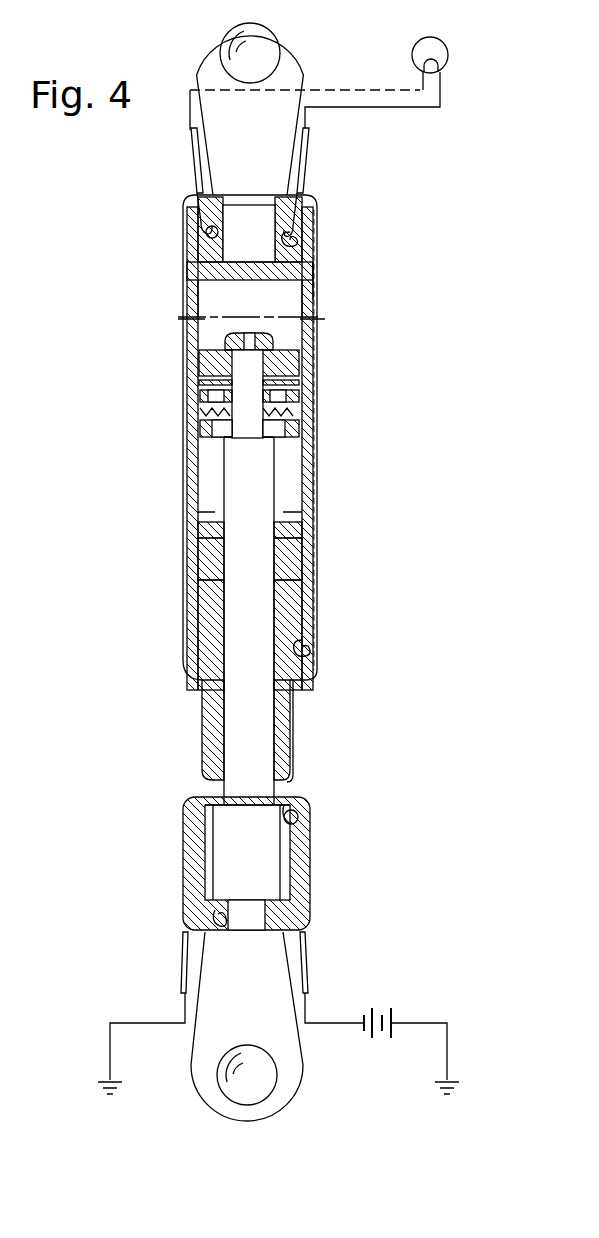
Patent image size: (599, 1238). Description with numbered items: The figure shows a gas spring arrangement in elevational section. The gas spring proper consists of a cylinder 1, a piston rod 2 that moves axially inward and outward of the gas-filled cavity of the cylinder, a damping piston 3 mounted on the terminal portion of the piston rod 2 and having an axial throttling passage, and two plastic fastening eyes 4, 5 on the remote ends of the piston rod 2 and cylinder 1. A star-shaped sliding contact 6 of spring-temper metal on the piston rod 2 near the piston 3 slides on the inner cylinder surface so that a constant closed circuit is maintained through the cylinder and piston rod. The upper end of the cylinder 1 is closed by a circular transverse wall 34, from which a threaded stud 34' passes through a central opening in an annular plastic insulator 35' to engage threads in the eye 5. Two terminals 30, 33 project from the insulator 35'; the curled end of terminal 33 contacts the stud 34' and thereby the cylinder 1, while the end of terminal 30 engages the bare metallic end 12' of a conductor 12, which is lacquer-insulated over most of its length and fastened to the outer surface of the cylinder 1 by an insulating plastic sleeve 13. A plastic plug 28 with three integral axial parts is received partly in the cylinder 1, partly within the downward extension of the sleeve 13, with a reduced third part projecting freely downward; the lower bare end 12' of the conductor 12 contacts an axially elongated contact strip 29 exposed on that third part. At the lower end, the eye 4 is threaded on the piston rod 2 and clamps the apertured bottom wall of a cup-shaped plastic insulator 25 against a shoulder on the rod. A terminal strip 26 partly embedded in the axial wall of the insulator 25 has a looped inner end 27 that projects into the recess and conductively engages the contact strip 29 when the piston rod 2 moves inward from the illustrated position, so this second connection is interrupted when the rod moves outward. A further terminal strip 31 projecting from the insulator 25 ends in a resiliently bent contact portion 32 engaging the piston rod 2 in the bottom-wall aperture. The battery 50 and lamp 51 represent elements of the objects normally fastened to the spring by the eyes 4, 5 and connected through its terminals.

The cylinder 1 is at (312, 452).
The piston rod 2 is at (232, 708).
The damping piston 3 is at (218, 356).
The fastening eye 4 is at (290, 1070).
The fastening eye 5 is at (292, 46).
The sliding contact 6 is at (300, 408).
The conductor 12 is at (274, 437).
The bare metallic end 12' is at (299, 426).
The insulating plastic sleeve 13 is at (320, 282).
The cup-shaped plastic insulator 25 is at (310, 848).
The terminal strip 26 is at (305, 968).
The looped inner end 27 is at (290, 806).
The plastic plug 28 is at (282, 755).
The contact strip 29 is at (295, 712).
The terminal 30 is at (308, 134).
The terminal strip 31 is at (185, 990).
The resiliently bent contact portion 32 is at (222, 928).
The terminal 33 is at (190, 140).
The transverse wall 34 is at (223, 273).
The threaded stud 34' is at (250, 293).
The annular plastic insulator 35' is at (171, 229).
The battery 50 is at (372, 1010).
The lamp 51 is at (450, 58).